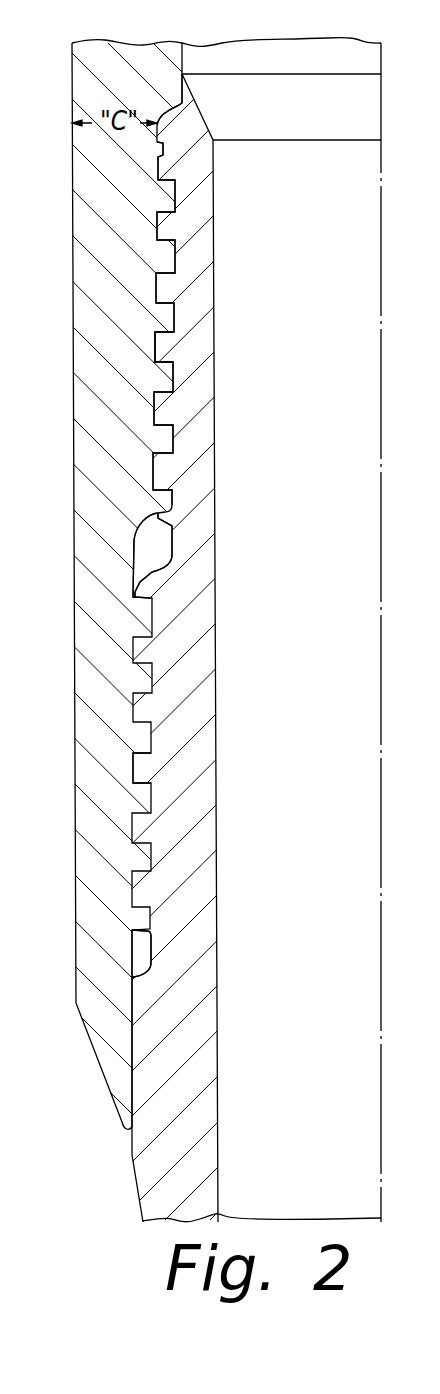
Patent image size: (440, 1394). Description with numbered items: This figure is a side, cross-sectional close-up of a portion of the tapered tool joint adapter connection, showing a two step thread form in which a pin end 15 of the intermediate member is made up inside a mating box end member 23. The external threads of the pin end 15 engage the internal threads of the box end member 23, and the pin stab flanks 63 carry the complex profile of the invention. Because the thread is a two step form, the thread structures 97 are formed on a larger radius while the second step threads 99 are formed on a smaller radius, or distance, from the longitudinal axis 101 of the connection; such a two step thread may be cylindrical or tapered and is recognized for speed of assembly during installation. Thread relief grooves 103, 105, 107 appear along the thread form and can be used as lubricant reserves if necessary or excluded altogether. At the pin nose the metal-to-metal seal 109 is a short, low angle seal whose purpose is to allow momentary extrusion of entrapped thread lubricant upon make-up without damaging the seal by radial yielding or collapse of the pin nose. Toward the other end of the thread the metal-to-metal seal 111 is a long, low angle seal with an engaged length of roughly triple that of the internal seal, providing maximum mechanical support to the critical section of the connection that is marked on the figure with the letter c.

The pin end 15 is at (163, 648).
The box end member 23 is at (95, 279).
The pin stab flank 63 is at (157, 220).
The thread structure 97 is at (135, 782).
The second step thread 99 is at (150, 360).
The longitudinal axis 101 is at (381, 476).
The thread relief groove 103 is at (160, 152).
The thread relief groove 105 is at (136, 550).
The thread relief groove 107 is at (138, 957).
The metal-to-metal seal 109 is at (183, 88).
The metal-to-metal seal 111 is at (137, 1058).